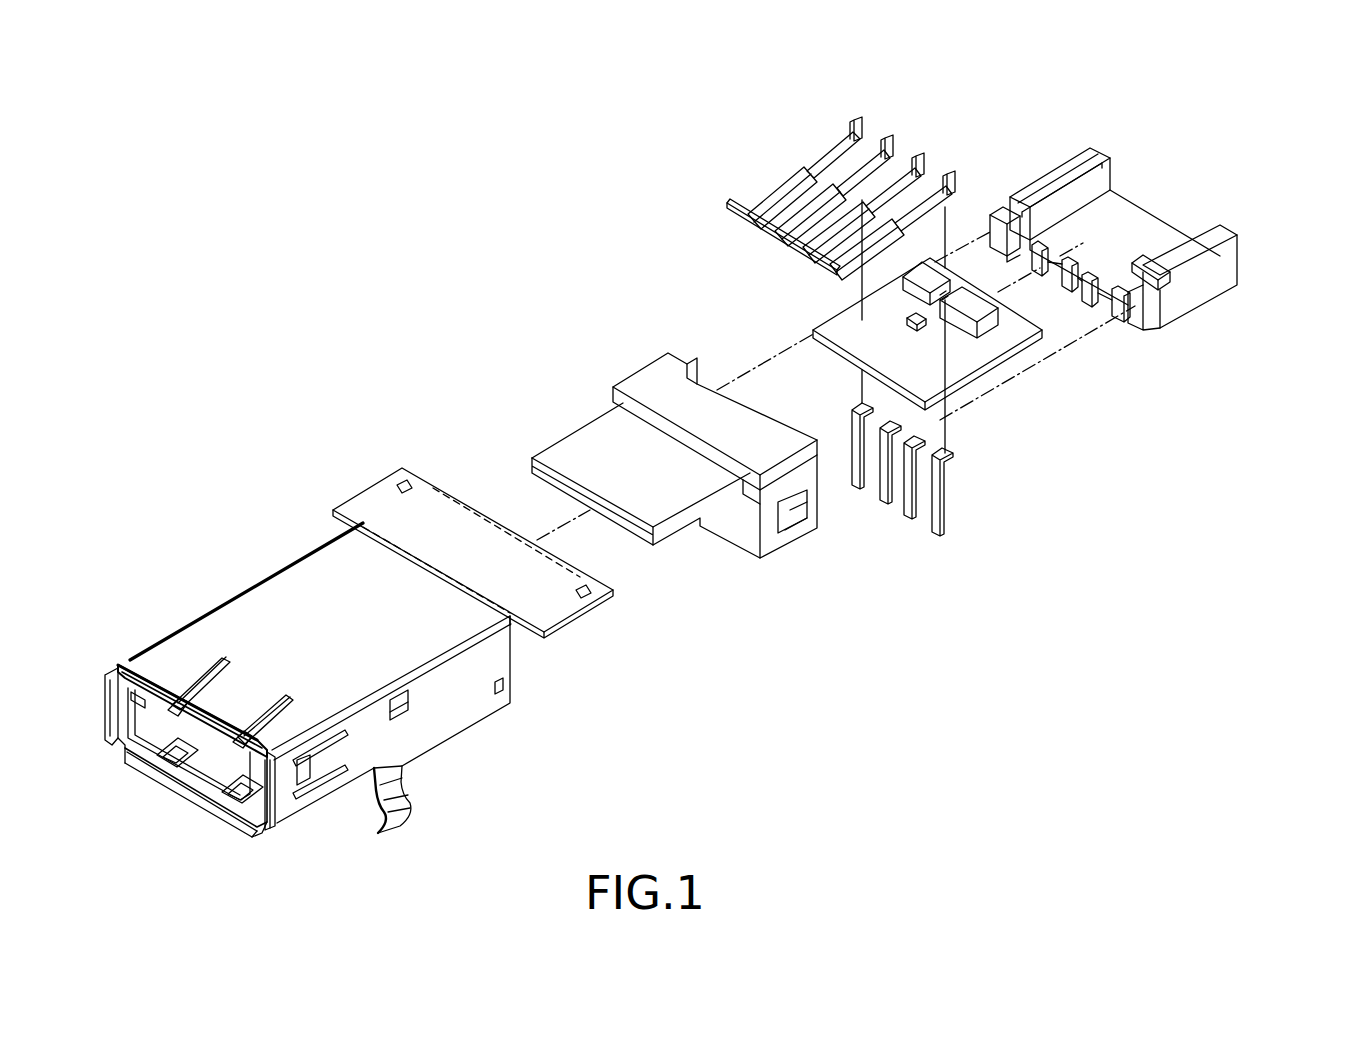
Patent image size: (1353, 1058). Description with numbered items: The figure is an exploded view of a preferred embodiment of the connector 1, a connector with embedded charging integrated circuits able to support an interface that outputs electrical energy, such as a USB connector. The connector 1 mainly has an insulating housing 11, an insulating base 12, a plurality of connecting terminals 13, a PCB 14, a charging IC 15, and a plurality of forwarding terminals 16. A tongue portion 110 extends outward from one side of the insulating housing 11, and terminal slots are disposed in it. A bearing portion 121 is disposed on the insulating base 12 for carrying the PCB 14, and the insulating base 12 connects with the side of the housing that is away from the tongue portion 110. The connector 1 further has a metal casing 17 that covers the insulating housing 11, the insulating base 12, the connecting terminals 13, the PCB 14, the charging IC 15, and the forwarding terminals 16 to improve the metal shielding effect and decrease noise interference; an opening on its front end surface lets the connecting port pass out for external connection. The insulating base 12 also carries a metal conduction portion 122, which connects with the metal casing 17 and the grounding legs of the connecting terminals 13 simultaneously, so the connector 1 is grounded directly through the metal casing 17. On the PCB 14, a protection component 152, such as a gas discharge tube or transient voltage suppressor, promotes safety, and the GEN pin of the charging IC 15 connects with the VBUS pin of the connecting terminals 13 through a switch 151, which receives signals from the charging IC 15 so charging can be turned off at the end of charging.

The connector 1 is at (485, 55).
The insulating housing 11 is at (640, 385).
The tongue portion 110 is at (568, 455).
The insulating base 12 is at (1057, 175).
The bearing portion 121 is at (1160, 208).
The metal conduction portion 122 is at (1180, 265).
The connecting terminals 13 is at (800, 150).
The PCB 14 is at (970, 357).
The charging IC 15 is at (930, 272).
The switch 151 is at (905, 318).
The protection component 152 is at (990, 325).
The forwarding terminals 16 is at (950, 500).
The metal casing 17 is at (262, 608).